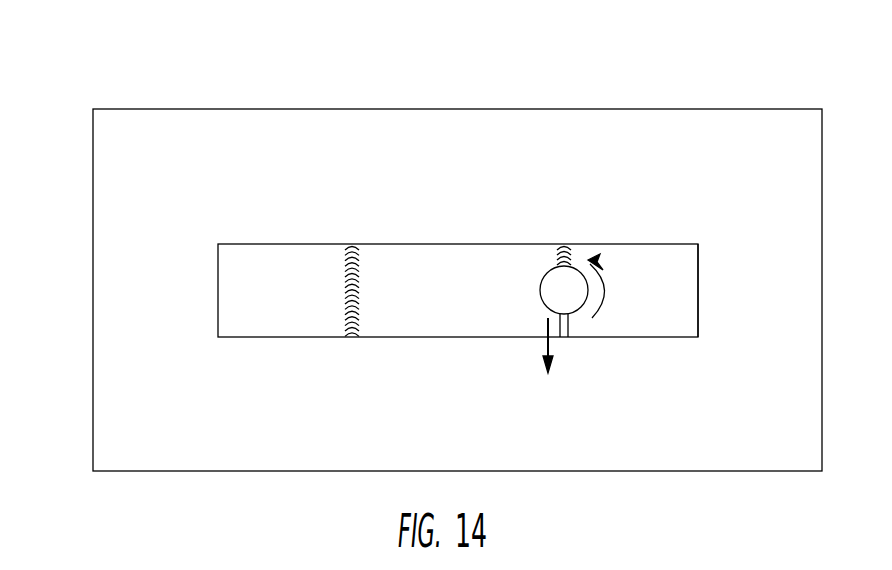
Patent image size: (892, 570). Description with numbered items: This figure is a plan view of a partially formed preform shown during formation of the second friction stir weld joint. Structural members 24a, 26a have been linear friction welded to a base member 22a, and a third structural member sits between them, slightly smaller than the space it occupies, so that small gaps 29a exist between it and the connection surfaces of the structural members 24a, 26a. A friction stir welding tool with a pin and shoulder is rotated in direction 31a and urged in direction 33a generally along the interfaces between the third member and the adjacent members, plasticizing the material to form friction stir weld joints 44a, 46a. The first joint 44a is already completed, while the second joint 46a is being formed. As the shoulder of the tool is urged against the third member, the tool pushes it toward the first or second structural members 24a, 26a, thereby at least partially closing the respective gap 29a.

The base member 22a is at (217, 127).
The first structural member 24a is at (232, 283).
The second structural member 26a is at (698, 292).
The gap 29a is at (567, 343).
The rotation direction 31a is at (604, 290).
The urging direction 33a is at (548, 328).
The friction stir weld joint 44a is at (355, 244).
The friction stir weld joint 46a is at (565, 247).